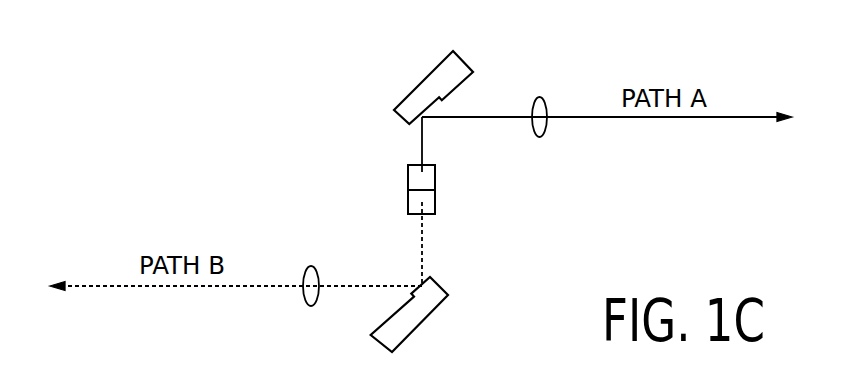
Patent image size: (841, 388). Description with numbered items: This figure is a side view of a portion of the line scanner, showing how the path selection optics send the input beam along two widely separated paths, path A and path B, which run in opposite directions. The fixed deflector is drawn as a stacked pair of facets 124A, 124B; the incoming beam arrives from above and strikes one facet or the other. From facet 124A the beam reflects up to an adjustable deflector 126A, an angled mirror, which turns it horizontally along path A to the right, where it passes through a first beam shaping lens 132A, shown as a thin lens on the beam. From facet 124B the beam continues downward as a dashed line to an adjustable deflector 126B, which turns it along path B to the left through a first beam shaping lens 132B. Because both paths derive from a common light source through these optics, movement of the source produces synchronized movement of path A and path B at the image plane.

The adjustable deflector 126A is at (423, 73).
The adjustable deflector 126B is at (436, 312).
The facet 124A is at (437, 168).
The facet 124B is at (437, 205).
The first beam shaping lens 132A is at (538, 97).
The first beam shaping lens 132B is at (309, 265).